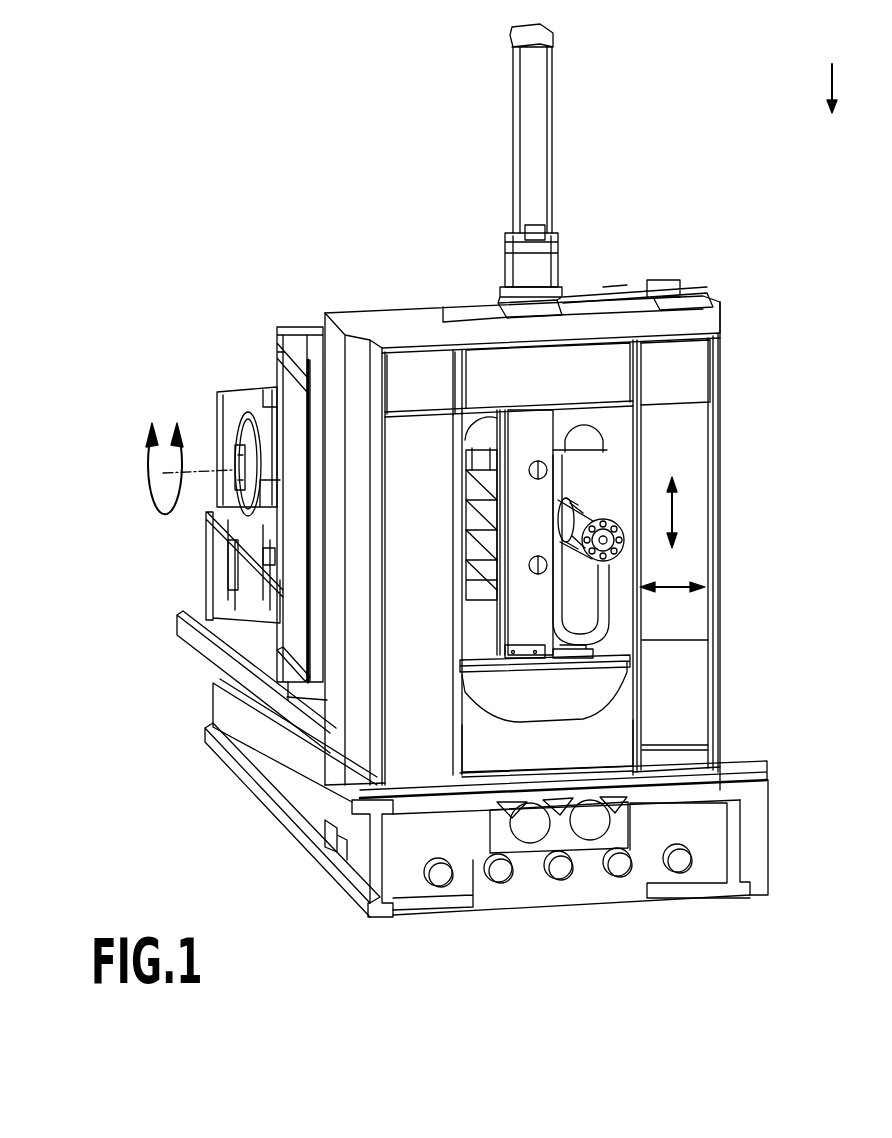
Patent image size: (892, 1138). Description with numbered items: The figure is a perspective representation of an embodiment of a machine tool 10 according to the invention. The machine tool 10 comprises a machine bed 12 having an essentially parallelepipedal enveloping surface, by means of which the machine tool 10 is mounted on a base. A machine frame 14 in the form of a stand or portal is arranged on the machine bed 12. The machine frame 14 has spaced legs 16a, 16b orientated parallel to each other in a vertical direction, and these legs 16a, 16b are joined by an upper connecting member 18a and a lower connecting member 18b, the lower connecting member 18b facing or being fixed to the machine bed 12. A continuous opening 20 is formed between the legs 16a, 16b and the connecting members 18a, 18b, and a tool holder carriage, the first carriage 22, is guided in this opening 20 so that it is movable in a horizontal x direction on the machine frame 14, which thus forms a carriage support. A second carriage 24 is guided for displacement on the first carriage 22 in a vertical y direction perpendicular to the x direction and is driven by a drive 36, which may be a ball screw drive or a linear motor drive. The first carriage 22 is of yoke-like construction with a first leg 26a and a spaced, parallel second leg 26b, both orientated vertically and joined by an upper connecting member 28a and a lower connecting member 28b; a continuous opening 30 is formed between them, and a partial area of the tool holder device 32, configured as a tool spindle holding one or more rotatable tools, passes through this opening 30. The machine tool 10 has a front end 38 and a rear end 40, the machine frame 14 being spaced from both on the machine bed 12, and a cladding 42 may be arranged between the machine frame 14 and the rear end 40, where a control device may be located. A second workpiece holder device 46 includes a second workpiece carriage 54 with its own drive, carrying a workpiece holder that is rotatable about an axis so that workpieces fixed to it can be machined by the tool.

The machine tool 10 is at (692, 120).
The machine bed 12 is at (308, 797).
The machine frame 14 is at (406, 645).
The leg 16a is at (400, 466).
The leg 16b is at (657, 362).
The upper connecting member 18a is at (430, 377).
The lower connecting member 18b is at (472, 733).
The continuous opening 20 is at (470, 610).
The first carriage 22 is at (622, 623).
The second carriage 24 is at (600, 458).
The first leg 26a is at (523, 600).
The second leg 26b is at (620, 637).
The upper connecting member 28a is at (615, 432).
The lower connecting member 28b is at (622, 650).
The continuous opening 30 is at (585, 610).
The tool holder device 32 is at (603, 482).
The drive 36 is at (548, 250).
The front end 38 is at (213, 705).
The rear end 40 is at (697, 872).
The cladding 42 is at (433, 720).
The second workpiece holder device 46 is at (200, 533).
The second workpiece carriage 54 is at (273, 507).